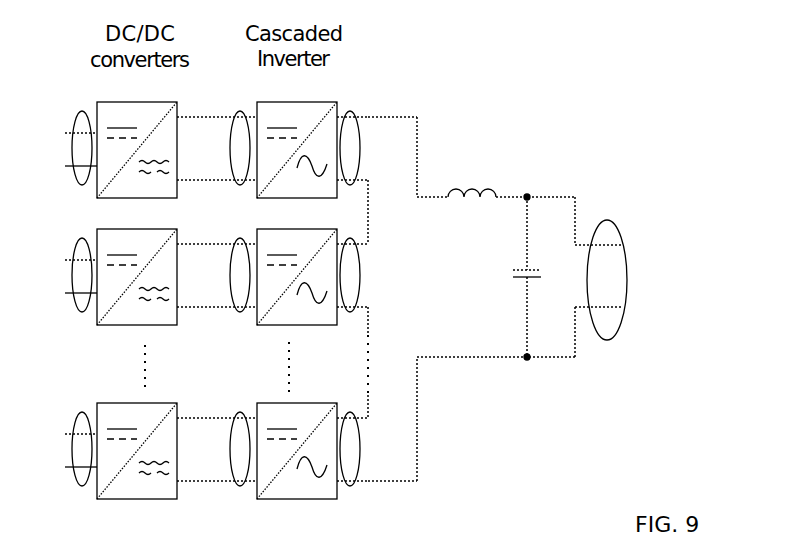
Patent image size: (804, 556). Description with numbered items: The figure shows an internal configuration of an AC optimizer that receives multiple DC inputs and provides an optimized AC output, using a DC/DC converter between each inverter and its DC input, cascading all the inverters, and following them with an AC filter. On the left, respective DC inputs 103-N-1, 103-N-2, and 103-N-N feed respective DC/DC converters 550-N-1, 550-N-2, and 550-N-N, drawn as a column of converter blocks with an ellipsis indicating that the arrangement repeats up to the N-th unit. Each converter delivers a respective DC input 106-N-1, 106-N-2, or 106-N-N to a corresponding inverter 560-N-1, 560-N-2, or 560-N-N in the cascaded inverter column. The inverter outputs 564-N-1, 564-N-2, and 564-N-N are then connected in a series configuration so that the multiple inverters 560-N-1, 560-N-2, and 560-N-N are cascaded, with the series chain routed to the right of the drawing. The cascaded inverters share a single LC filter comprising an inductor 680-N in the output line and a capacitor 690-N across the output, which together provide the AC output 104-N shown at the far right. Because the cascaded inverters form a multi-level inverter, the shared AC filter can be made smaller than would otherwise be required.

The DC input 103-N-1 is at (82, 111).
The DC input 103-N-2 is at (82, 238).
The DC input 103-N-N is at (82, 412).
The DC/DC converter 550-N-1 is at (100, 102).
The DC/DC converter 550-N-2 is at (100, 229).
The DC/DC converter 550-N-N is at (113, 499).
The DC input 106-N-1 is at (240, 111).
The DC input 106-N-2 is at (240, 238).
The DC input 106-N-N is at (240, 412).
The inverter 560-N-1 is at (300, 102).
The inverter 560-N-2 is at (322, 338).
The inverter 560-N-N is at (262, 499).
The inverter AC output 564-N-1 is at (350, 111).
The inverter AC output 564-N-2 is at (350, 238).
The inverter AC output 564-N-N is at (350, 412).
The inductor 680-N is at (494, 180).
The capacitor 690-N is at (507, 268).
The AC output 104-N is at (607, 220).